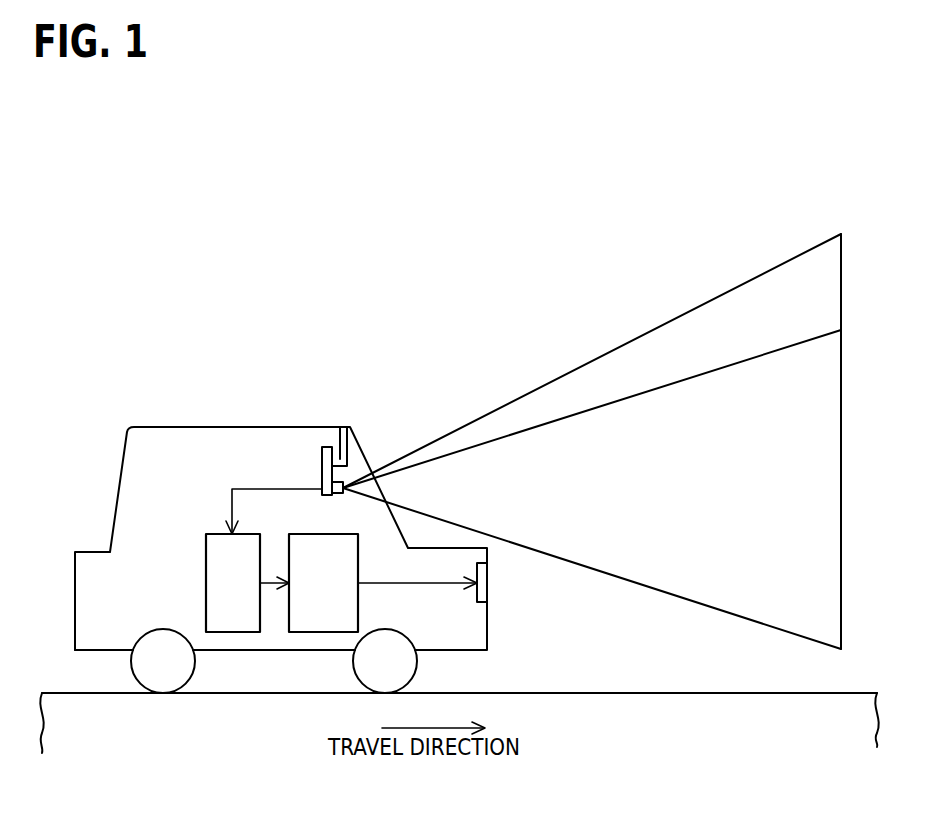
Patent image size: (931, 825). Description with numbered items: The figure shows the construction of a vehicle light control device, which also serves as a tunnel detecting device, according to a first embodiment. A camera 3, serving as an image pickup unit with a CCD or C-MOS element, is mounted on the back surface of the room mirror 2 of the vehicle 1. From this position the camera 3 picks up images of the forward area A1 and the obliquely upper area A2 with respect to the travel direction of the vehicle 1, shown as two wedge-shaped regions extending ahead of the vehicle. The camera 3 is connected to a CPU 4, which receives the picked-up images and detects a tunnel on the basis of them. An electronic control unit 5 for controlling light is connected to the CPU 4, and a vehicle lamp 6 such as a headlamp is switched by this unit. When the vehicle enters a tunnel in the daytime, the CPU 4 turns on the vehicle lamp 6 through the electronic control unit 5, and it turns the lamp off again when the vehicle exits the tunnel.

The vehicle 1 is at (155, 424).
The room mirror 2 is at (321, 455).
The camera 3 is at (333, 496).
The CPU 4 is at (206, 560).
The electronic control unit 5 is at (358, 601).
The vehicle lamp 6 is at (477, 572).
The forward area A1 is at (592, 536).
The obliquely upper area A2 is at (539, 409).